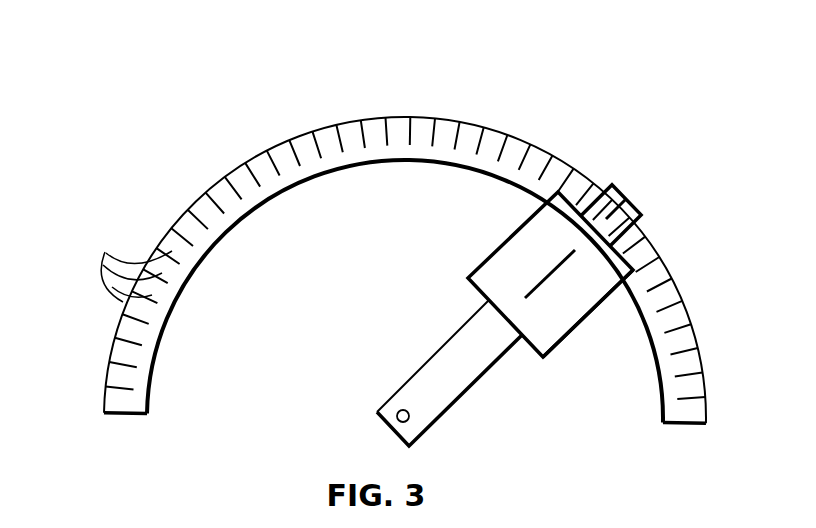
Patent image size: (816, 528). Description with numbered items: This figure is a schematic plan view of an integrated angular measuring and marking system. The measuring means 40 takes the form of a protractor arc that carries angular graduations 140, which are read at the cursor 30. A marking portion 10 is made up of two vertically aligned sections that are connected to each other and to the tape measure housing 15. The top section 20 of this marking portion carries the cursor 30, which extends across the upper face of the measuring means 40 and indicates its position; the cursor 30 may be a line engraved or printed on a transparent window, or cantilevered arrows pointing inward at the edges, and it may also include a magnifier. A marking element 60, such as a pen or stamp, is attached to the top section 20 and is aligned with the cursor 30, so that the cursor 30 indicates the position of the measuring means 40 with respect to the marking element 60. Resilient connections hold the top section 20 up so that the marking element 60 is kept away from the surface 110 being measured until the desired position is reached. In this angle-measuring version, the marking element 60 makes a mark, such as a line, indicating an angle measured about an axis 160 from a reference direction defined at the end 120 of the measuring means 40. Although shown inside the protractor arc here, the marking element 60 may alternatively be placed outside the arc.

The surface being measured 110 is at (172, 163).
The end of the measuring element 120 is at (130, 414).
The measuring means 40 is at (425, 128).
The angular graduations 140 is at (105, 252).
The marking portion 10 is at (556, 352).
The tape measure housing 15 is at (592, 310).
The top section 20 is at (613, 188).
The cursor 30 is at (641, 216).
The marking element 60 is at (546, 280).
The axis 160 is at (403, 410).